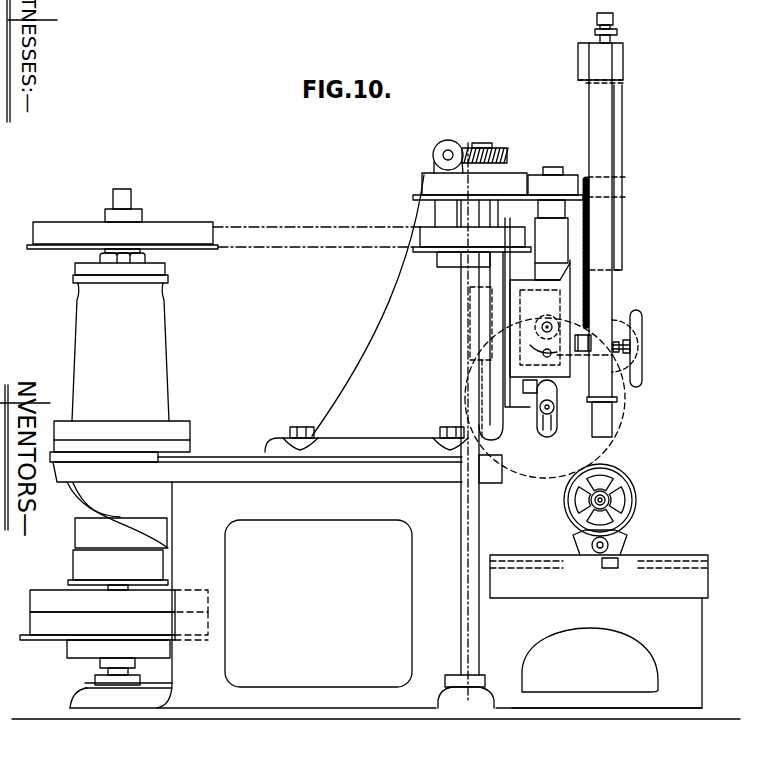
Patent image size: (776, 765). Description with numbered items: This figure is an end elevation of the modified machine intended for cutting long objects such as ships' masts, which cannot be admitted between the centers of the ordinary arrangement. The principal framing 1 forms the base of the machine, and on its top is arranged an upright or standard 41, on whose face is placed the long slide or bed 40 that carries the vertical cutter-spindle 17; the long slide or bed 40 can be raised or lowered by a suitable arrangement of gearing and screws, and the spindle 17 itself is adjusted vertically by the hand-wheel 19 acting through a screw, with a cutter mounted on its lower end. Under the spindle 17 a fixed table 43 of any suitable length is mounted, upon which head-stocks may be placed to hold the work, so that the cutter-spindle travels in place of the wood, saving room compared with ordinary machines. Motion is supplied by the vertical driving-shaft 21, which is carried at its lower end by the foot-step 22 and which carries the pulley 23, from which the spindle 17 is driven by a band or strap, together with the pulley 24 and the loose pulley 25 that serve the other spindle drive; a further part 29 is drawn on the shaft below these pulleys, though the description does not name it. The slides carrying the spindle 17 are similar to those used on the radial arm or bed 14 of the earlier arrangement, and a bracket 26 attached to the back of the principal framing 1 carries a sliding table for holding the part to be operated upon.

The principal framing 1 is at (376, 431).
The radial arm or bed 14 is at (122, 350).
The vertical spindle 17 is at (602, 417).
The hand-wheel 19 is at (629, 356).
The driving-shaft 21 is at (123, 198).
The foot-step 22 is at (121, 691).
The pulley 23 is at (224, 235).
The pulley 24 is at (119, 601).
The loose pulley 25 is at (114, 626).
The bracket 26 is at (577, 257).
The collar 29 is at (118, 657).
The long slide or bed 40 is at (574, 318).
The upright or standard 41 is at (424, 296).
The fixed table 43 is at (599, 576).